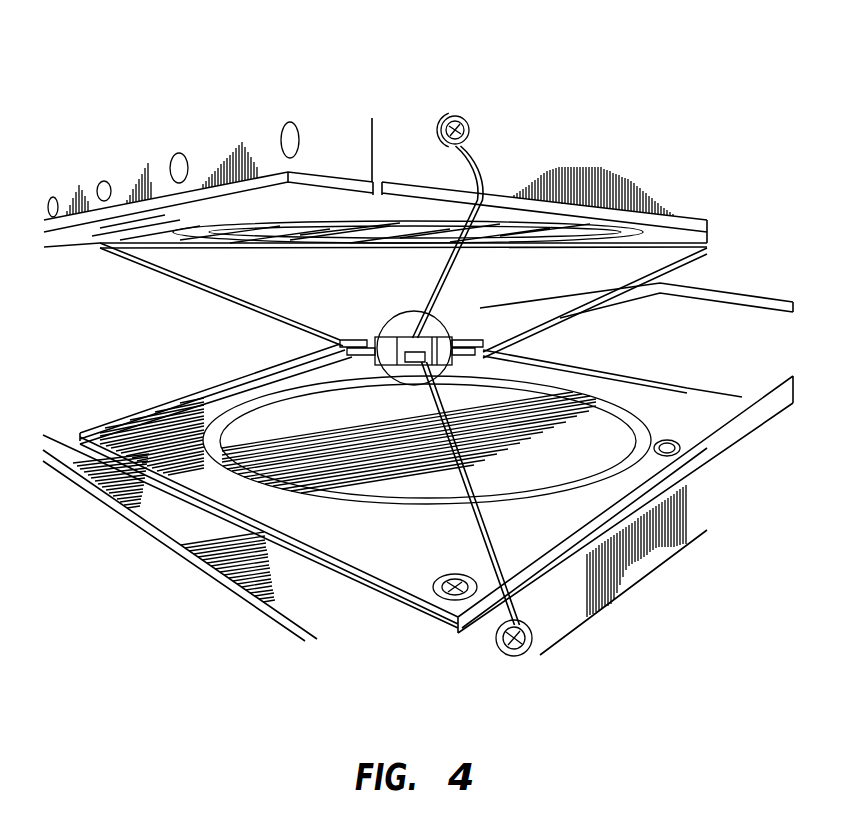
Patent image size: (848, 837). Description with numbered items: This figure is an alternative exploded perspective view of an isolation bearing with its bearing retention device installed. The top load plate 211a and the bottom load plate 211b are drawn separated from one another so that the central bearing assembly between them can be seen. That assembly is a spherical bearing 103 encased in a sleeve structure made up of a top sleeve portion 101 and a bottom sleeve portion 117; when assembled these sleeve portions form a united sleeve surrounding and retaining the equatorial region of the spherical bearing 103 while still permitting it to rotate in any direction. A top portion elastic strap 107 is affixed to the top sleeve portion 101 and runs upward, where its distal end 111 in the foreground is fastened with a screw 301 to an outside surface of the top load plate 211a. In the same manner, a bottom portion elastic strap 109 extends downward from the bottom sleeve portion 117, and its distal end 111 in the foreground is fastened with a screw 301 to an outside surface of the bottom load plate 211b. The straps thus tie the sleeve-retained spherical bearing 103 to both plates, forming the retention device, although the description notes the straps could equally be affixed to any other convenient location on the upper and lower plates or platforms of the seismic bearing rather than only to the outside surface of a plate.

The top sleeve portion 101 is at (560, 317).
The spherical bearing 103 is at (400, 327).
The top portion elastic strap 107 is at (482, 192).
The bottom portion elastic strap 109 is at (492, 545).
The distal end 111 is at (495, 665).
The bottom sleeve portion 117 is at (383, 352).
The top load plate 211a is at (570, 165).
The bottom load plate 211b is at (640, 557).
The screw 301 is at (458, 127).